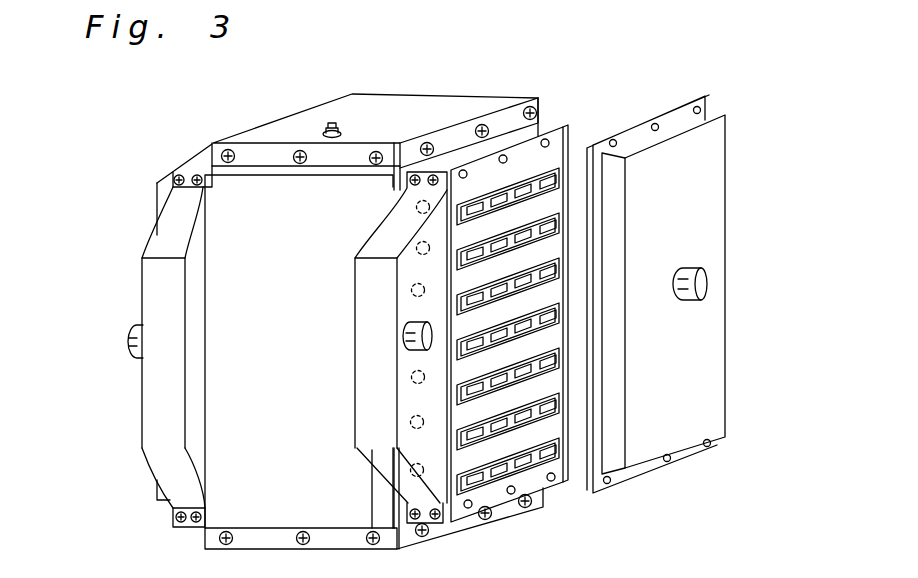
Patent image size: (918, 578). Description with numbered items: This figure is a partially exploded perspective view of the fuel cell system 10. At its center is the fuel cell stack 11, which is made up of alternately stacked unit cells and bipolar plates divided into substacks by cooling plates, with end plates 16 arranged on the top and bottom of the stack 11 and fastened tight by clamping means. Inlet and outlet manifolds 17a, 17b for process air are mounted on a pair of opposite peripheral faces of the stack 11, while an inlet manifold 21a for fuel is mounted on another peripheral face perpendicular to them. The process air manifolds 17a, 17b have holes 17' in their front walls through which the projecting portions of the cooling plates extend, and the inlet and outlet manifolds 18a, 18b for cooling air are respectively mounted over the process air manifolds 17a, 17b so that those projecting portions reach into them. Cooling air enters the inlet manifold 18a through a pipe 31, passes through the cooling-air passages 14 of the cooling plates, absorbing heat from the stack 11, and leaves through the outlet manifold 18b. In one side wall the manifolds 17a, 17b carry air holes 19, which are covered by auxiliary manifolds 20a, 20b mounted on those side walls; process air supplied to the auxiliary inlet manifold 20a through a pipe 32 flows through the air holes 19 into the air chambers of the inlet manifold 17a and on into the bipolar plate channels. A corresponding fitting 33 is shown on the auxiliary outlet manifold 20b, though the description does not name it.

The fuel cell system 10 is at (473, 81).
The fuel cell stack 11 is at (368, 92).
The cooling-air passages 14 is at (555, 222).
The end plates 16 is at (402, 110).
The holes 17' is at (571, 294).
The inlet manifold for process air 17a is at (533, 153).
The outlet manifold for process air 17b is at (202, 160).
The inlet manifold for cooling air 18a is at (710, 190).
The outlet manifold for cooling air 18b is at (160, 200).
The air holes 19 is at (411, 289).
The auxiliary inlet manifold 20a is at (373, 423).
The auxiliary outlet manifold 20b is at (160, 417).
The inlet manifold for fuel 21a is at (232, 497).
The pipe 31 is at (688, 272).
The pipe 32 is at (402, 333).
The terminal 33 is at (130, 330).